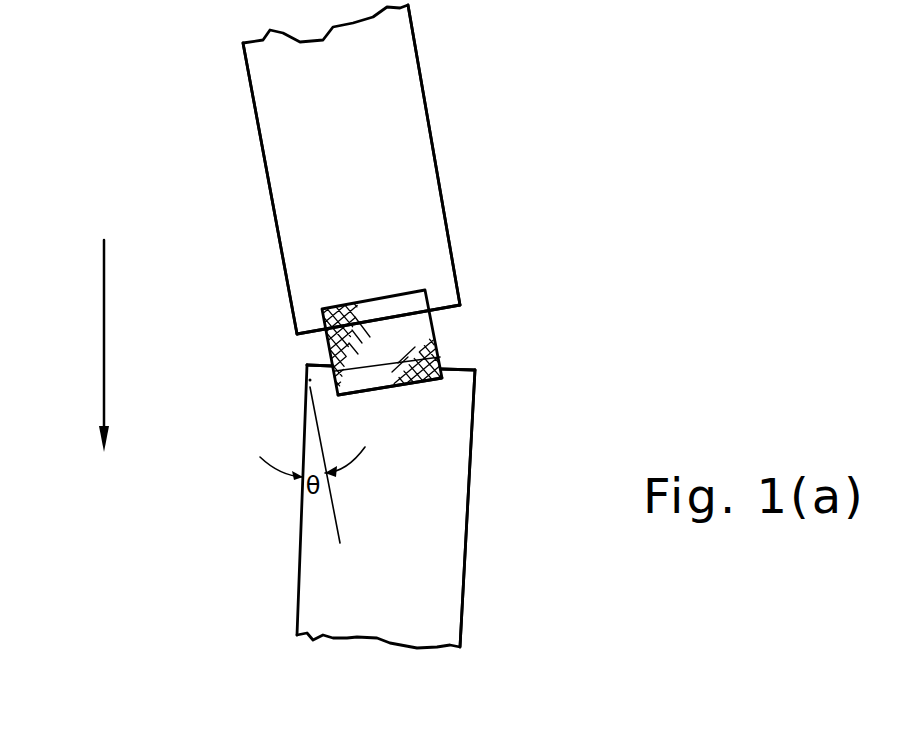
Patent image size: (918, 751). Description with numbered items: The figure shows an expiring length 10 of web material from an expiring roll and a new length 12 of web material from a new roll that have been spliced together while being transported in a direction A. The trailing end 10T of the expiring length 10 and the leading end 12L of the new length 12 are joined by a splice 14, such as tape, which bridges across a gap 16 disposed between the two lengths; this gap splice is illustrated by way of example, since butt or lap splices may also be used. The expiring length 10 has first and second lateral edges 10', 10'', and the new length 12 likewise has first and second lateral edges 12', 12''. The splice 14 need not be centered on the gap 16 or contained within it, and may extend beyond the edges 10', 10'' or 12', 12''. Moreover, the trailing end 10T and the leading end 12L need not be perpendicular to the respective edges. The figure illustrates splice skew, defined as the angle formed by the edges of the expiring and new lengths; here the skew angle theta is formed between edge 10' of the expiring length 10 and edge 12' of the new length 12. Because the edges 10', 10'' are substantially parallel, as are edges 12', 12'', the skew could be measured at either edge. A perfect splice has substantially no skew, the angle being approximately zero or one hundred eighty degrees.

The expiring length 10 is at (386, 506).
The first lateral edge of expiring length 10' is at (253, 500).
The second lateral edge of expiring length 10'' is at (510, 508).
The trailing end 10T is at (452, 370).
The new length 12 is at (351, 169).
The first lateral edge of new length 12' is at (228, 188).
The second lateral edge of new length 12'' is at (492, 155).
The leading end 12L is at (443, 310).
The splice 14 is at (322, 332).
The gap 16 is at (318, 353).
The direction of transport A is at (102, 363).